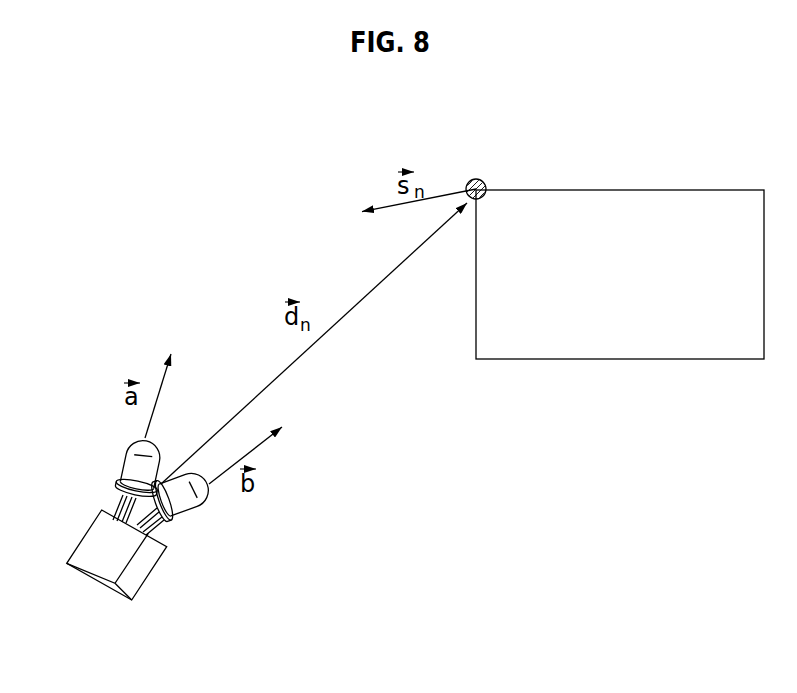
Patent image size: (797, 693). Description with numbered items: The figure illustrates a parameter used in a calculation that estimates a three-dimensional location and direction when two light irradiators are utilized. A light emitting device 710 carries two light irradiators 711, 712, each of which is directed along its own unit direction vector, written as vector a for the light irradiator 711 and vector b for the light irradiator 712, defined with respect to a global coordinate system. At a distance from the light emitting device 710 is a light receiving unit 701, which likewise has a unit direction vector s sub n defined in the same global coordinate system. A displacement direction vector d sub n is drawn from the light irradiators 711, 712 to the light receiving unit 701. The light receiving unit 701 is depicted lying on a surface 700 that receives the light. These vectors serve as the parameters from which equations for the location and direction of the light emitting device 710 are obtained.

The object surface 700 is at (617, 167).
The light receiving unit 701 is at (480, 178).
The light emitting device 710 is at (162, 586).
The light irradiator 711 is at (125, 458).
The light irradiator 712 is at (195, 508).